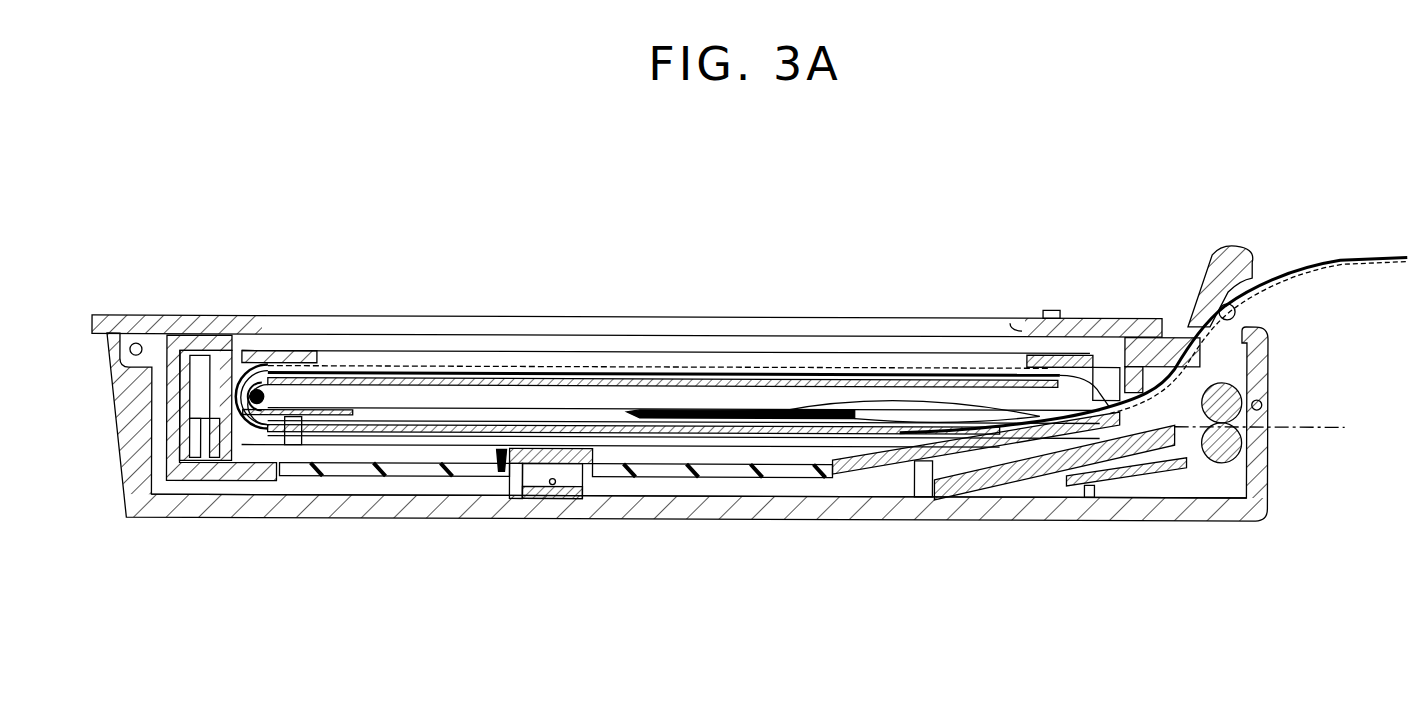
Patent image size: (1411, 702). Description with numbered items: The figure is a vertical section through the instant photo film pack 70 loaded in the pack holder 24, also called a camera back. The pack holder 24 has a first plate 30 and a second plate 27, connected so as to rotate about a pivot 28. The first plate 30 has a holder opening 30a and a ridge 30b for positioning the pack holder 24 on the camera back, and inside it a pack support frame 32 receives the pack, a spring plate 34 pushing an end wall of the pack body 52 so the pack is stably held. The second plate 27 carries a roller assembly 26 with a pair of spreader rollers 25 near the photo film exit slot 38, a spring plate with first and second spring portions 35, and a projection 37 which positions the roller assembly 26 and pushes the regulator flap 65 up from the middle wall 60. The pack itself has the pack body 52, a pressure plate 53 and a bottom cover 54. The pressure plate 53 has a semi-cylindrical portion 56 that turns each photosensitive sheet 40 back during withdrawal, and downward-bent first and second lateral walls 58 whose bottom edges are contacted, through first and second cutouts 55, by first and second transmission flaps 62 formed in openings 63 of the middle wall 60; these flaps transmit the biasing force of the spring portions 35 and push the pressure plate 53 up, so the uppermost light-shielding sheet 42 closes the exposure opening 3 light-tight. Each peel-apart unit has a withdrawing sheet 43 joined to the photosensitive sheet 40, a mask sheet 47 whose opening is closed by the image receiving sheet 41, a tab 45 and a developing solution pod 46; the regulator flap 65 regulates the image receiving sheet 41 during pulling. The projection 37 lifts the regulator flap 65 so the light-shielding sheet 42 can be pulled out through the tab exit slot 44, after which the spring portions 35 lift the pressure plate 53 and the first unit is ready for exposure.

The exposure opening 3 is at (327, 352).
The pack holder 24 is at (320, 516).
The spreader rollers 25 is at (1268, 381).
The roller assembly 26 is at (1037, 477).
The second plate 27 is at (727, 516).
The pivot 28 is at (137, 340).
The first plate 30 is at (713, 323).
The holder opening 30a is at (1022, 325).
The ridge 30b is at (1051, 307).
The pack support frame 32 is at (222, 472).
The spring plate 34 is at (203, 385).
The first and second spring portions 35 is at (565, 478).
The projection 37 is at (913, 477).
The photo film exit slot 38 is at (1270, 406).
The photosensitive sheet 40 is at (510, 364).
The image receiving sheet 41 is at (598, 416).
The light-shielding sheet 42 is at (387, 370).
The withdrawing sheet 43 is at (820, 405).
The tab exit slot 44 is at (1190, 313).
The tab 45 is at (1227, 306).
The developing solution pod 46 is at (303, 439).
The mask sheet 47 is at (890, 420).
The pack body 52 is at (270, 363).
The pressure plate 53 is at (442, 376).
The bottom cover 54 is at (410, 473).
The first and second cutouts 55 is at (493, 469).
The semi-cylindrical portion 56 is at (247, 377).
The first and second lateral walls 58 is at (827, 437).
The middle wall 60 is at (363, 471).
The first and second transmission flaps 62 is at (580, 446).
The openings 63 is at (517, 471).
The regulator flap 65 is at (992, 440).
The instant photo film pack 70 is at (443, 349).